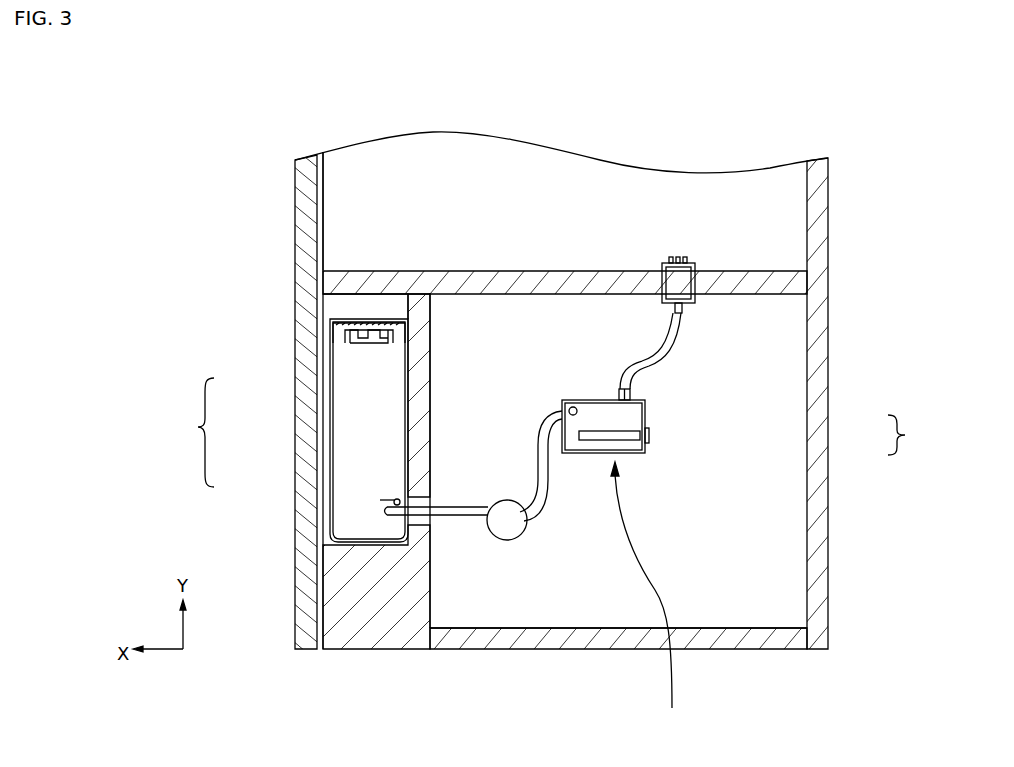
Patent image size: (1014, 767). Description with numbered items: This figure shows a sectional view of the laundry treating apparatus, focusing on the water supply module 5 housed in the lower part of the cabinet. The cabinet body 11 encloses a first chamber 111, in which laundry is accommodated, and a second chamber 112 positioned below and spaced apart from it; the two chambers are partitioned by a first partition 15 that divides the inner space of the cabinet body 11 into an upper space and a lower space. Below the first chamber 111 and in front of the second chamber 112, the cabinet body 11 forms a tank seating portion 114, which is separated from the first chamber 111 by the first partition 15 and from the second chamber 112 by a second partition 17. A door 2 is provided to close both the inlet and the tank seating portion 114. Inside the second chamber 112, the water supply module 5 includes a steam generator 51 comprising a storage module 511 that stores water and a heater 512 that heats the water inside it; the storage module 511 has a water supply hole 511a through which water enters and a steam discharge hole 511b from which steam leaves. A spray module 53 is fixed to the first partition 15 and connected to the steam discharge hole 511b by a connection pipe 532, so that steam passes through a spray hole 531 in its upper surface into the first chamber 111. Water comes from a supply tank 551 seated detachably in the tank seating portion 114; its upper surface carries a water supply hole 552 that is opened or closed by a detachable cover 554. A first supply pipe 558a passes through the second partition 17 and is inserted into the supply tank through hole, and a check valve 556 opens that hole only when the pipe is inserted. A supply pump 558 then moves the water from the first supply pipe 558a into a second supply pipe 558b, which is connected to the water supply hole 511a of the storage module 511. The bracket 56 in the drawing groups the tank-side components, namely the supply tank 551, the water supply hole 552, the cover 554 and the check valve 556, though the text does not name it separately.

The door 2 is at (298, 185).
The cabinet body 11 is at (824, 200).
The first chamber 111 is at (784, 214).
The second chamber 112 is at (778, 584).
The tank seating portion 114 is at (357, 301).
The first partition 15 is at (383, 278).
The second partition 17 is at (417, 335).
The spray module 53 is at (683, 285).
The spray hole 531 is at (682, 256).
The connection pipe 532 is at (670, 347).
The steam generator 51 is at (910, 435).
The storage module 511 is at (632, 410).
The water supply hole 511a is at (573, 405).
The steam discharge hole 511b is at (632, 392).
The heater 512 is at (627, 442).
The water supply module 5 is at (644, 599).
The fragrance module 56 is at (196, 432).
The supply tank 551 is at (358, 443).
The water supply hole 552 is at (369, 343).
The cover 554 is at (342, 320).
The check valve 556 is at (380, 500).
The first supply pipe 558a is at (377, 522).
The supply pump 558 is at (498, 532).
The second supply pipe 558b is at (543, 510).